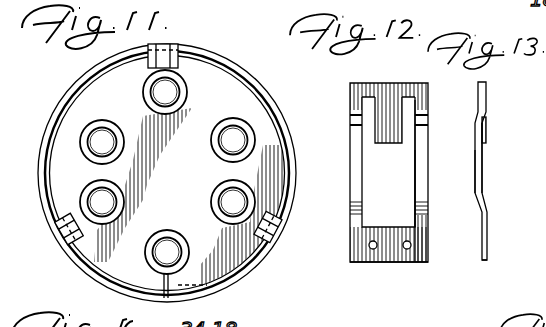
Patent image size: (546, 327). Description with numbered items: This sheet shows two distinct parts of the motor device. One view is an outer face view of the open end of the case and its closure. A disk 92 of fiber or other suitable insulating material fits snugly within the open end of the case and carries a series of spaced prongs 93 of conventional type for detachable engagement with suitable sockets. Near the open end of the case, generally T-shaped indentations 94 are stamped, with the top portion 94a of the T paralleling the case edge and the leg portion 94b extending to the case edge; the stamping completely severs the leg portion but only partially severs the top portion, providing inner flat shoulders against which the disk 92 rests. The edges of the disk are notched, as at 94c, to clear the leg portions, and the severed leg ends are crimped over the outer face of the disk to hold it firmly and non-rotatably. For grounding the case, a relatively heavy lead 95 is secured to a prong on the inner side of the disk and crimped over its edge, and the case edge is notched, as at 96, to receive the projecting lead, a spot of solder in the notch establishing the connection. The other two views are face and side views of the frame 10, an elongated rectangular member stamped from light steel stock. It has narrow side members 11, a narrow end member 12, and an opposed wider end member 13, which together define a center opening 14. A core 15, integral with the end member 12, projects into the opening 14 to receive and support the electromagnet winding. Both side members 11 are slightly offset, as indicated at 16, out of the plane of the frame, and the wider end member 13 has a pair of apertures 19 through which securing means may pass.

In FIG. 12, the frame 10 is at (432, 165).
In FIG. 13, the frame 10 is at (486, 152).
In FIG. 12, the side members 11 is at (352, 175).
In FIG. 13, the side members 11 is at (485, 228).
In FIG. 12, the end member 12 is at (409, 86).
In FIG. 12, the end member 13 is at (413, 262).
In FIG. 13, the end member 13 is at (486, 262).
In FIG. 12, the center opening 14 is at (409, 192).
In FIG. 12, the core 15 is at (398, 134).
In FIG. 13, the core 15 is at (490, 118).
In FIG. 12, the offset 16 is at (352, 163).
In FIG. 13, the offset 16 is at (483, 177).
In FIG. 12, the apertures 19 is at (405, 250).
In FIG. 11, the disk 92 is at (292, 143).
In FIG. 11, the prongs 93 is at (242, 134).
In FIG. 11, the indentations 94 is at (62, 236).
In FIG. 11, the top portion 94a is at (176, 44).
In FIG. 11, the leg portion 94b is at (198, 67).
In FIG. 11, the notches 94c is at (148, 70).
In FIG. 11, the lead 95 is at (226, 292).
In FIG. 11, the notch 96 is at (189, 300).